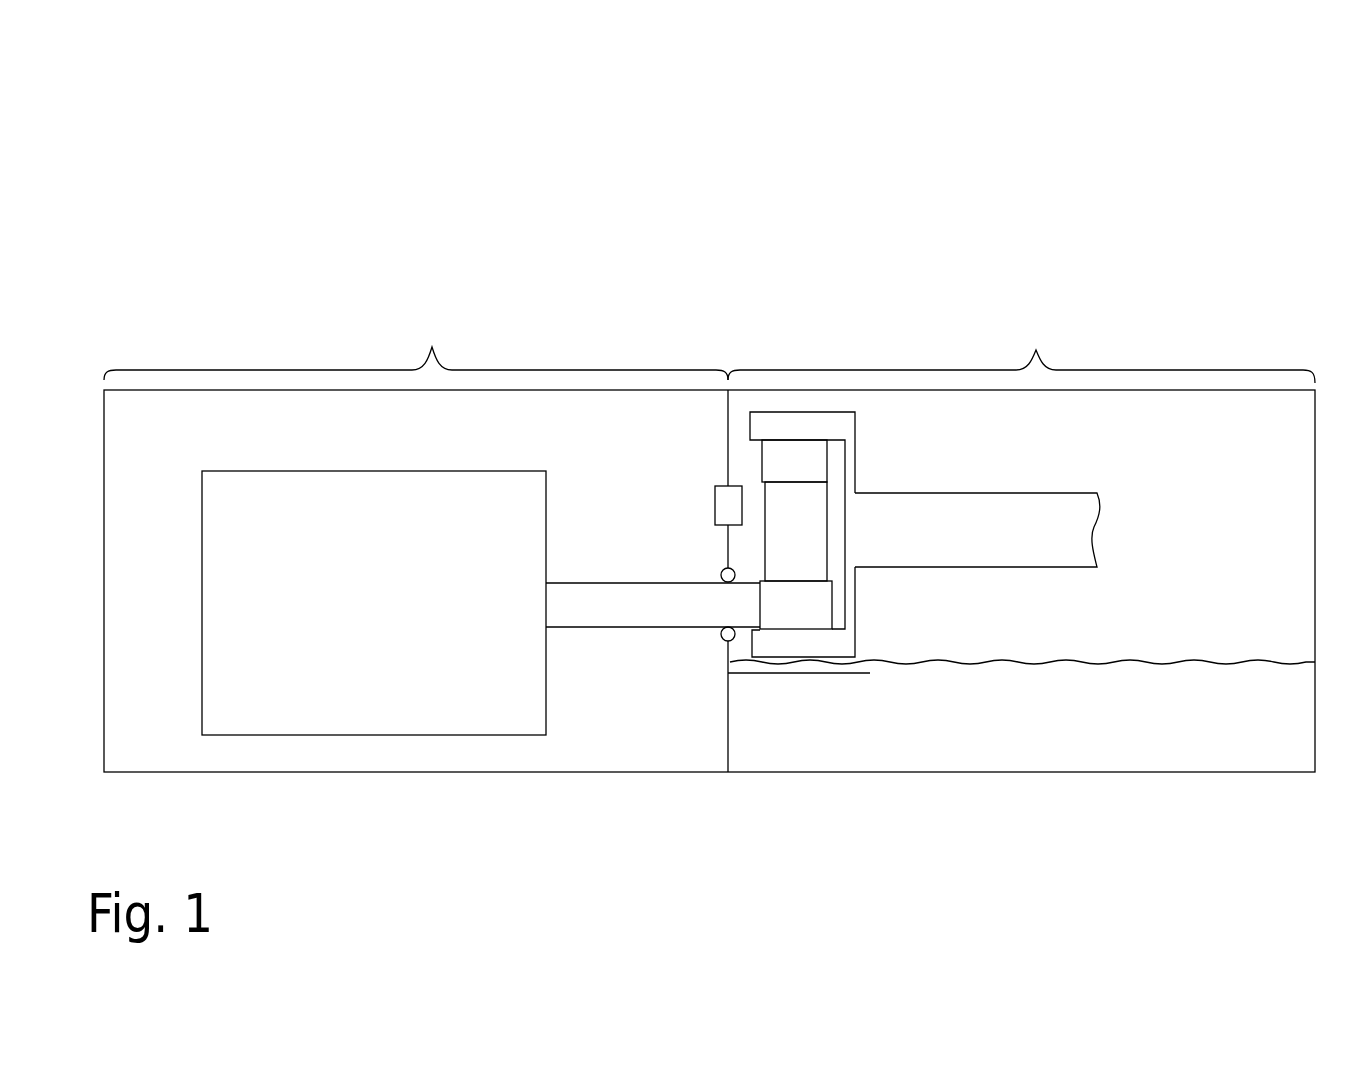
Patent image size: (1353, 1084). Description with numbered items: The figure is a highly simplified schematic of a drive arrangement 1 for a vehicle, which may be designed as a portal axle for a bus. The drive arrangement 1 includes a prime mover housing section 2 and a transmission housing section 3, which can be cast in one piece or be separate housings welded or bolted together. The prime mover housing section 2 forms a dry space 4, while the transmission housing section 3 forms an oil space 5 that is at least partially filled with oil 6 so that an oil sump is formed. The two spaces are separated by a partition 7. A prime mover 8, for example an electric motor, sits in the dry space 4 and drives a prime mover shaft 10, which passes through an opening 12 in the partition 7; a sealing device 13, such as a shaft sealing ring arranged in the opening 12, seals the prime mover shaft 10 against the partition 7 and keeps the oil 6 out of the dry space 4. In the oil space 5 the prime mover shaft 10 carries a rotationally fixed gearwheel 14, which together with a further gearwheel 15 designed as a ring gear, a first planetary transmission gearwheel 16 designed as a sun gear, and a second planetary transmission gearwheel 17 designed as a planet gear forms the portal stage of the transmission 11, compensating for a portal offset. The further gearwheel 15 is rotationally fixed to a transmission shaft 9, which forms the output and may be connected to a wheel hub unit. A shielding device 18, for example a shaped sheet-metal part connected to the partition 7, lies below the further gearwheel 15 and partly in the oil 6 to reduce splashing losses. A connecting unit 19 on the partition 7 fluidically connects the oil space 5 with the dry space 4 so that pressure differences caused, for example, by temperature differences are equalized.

The drive arrangement 1 is at (1205, 218).
The prime mover housing section 2 is at (416, 348).
The transmission housing section 3 is at (1021, 348).
The dry space 4 is at (567, 443).
The oil space 5 is at (942, 450).
The oil 6 is at (1053, 745).
The partition 7 is at (728, 723).
The prime mover 8 is at (351, 608).
The transmission shaft 9 is at (942, 538).
The prime mover shaft 10 is at (617, 605).
The transmission 11 is at (888, 603).
The opening 12 is at (713, 632).
The sealing device 13 is at (720, 643).
The gearwheel 14 is at (786, 616).
The further gearwheel 15 is at (797, 428).
The first planetary transmission gearwheel 16 is at (788, 541).
The second planetary transmission gearwheel 17 is at (785, 471).
The shielding device 18 is at (793, 675).
The connecting unit 19 is at (722, 500).